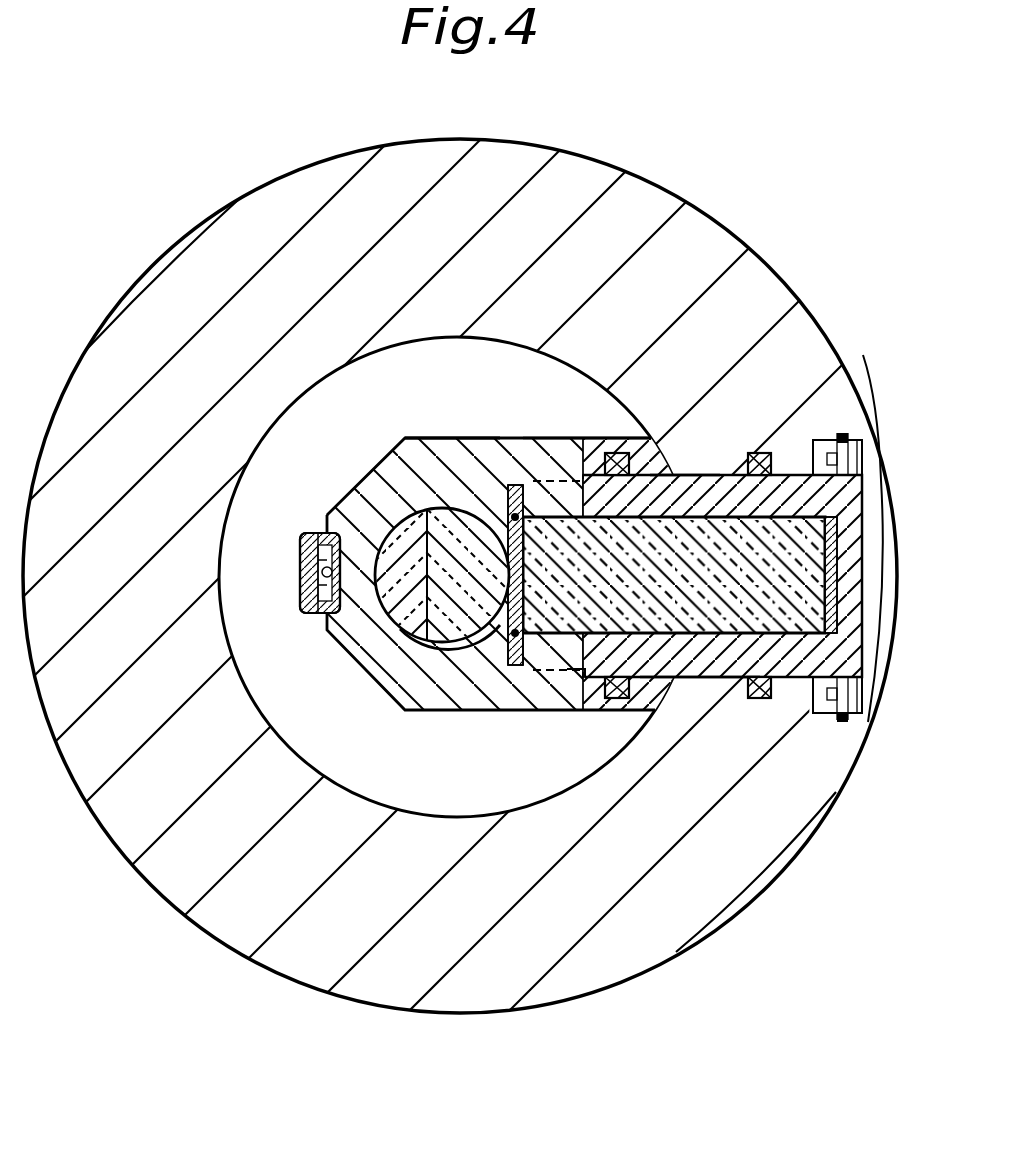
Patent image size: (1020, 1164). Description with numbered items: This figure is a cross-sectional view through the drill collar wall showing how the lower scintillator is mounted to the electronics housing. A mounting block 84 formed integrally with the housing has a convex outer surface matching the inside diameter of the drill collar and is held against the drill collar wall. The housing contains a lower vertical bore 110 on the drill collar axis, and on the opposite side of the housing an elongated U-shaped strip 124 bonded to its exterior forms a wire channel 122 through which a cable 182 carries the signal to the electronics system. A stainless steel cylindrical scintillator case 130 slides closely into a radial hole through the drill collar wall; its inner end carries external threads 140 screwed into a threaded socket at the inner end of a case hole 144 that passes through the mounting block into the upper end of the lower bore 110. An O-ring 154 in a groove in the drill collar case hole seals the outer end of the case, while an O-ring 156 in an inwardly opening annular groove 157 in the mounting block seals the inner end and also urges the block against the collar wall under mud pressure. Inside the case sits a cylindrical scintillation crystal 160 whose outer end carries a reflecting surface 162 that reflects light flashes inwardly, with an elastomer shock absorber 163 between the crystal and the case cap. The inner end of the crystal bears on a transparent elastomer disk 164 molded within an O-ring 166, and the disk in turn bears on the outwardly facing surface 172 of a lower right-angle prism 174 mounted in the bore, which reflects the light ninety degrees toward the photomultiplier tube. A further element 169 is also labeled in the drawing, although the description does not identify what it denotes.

The mounting block 84 is at (587, 680).
The lower vertical bore 110 is at (398, 470).
The wire channel 122 is at (320, 618).
The U-shaped strip 124 is at (305, 540).
The scintillator case 130 is at (692, 690).
The external threads 140 is at (557, 712).
The case hole 144 is at (527, 478).
The O-ring 154 is at (757, 476).
The O-ring 156 is at (618, 452).
The annular groove 157 is at (664, 441).
The scintillation crystal 160 is at (783, 690).
The reflecting surface 162 is at (822, 547).
The elastomer shock absorber 163 is at (881, 470).
The disk 164 is at (545, 560).
The O-ring 166 is at (486, 660).
The seal groove 169 is at (518, 485).
The outwardly facing surface 172 is at (508, 531).
The lower right-angle prism 174 is at (440, 510).
The cable 182 is at (318, 585).